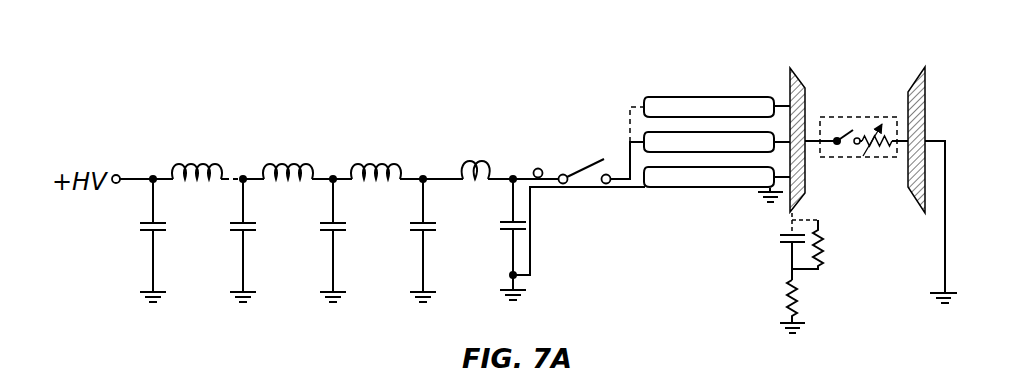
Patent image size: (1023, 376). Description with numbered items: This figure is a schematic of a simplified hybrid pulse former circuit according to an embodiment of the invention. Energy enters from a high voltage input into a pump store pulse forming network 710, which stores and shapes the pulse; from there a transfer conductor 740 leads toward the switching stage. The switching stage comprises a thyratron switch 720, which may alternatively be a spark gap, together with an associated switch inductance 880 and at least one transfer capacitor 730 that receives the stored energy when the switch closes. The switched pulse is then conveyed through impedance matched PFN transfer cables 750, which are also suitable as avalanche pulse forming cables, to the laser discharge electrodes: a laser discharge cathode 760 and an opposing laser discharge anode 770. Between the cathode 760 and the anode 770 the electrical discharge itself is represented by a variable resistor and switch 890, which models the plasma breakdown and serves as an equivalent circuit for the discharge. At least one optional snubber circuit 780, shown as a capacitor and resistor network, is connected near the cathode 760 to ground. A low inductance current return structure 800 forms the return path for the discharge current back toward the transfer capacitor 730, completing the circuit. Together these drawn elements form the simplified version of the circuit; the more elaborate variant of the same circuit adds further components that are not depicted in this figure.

The pump store pulse forming network 710 is at (427, 157).
The thyratron switch 720 is at (592, 155).
The transfer capacitor 730 is at (498, 228).
The transfer conductor 740 is at (466, 155).
The impedance matched PFN transfer cables 750 is at (713, 193).
The laser discharge cathode 760 is at (803, 81).
The laser discharge anode 770 is at (912, 77).
The snubber circuit 780 is at (780, 213).
The low inductance current return structure 800 is at (553, 191).
The switch inductance 880 is at (533, 166).
The variable resistor and switch 890 is at (886, 160).